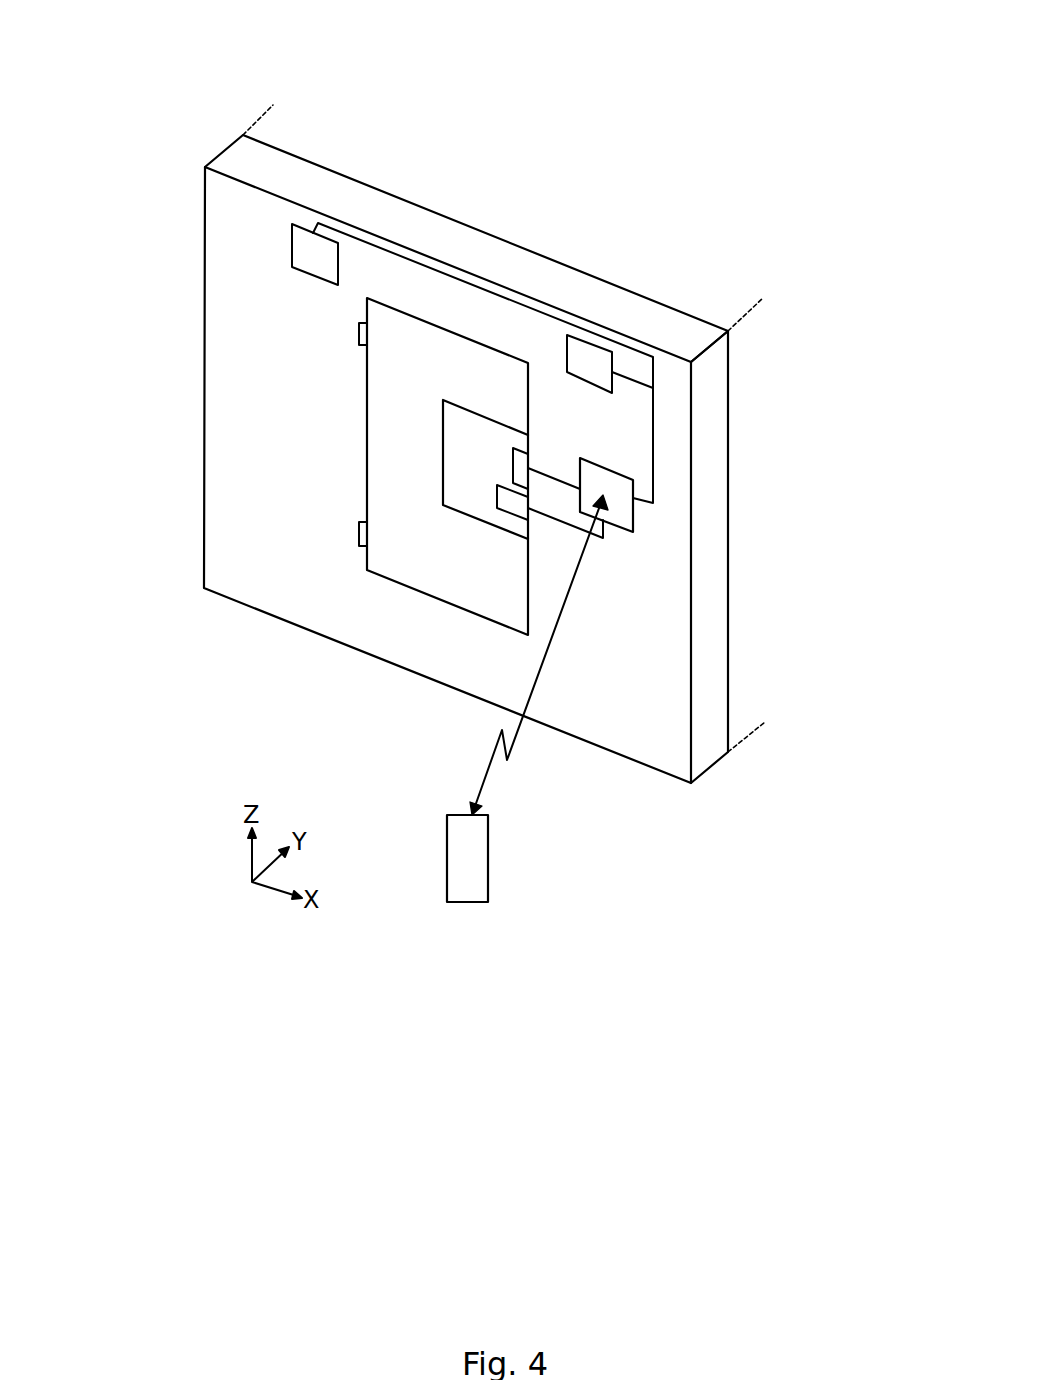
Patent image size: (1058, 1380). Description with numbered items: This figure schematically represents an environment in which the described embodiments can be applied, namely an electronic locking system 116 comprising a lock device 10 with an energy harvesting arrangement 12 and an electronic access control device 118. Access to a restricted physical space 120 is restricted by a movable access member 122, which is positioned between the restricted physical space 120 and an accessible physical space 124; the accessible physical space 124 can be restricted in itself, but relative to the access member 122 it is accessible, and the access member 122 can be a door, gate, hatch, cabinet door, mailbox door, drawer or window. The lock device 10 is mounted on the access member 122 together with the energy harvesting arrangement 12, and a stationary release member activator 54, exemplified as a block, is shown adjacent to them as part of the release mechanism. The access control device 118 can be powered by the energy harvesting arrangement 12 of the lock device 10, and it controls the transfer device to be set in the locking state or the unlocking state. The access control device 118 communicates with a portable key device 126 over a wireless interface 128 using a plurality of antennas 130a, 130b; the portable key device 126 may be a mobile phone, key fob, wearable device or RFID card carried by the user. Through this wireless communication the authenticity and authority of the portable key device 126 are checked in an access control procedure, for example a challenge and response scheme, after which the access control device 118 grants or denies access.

The electronic locking system 116 is at (643, 101).
The physical space 120 is at (551, 199).
The accessible physical space 124 is at (245, 717).
The movable access member 122 is at (433, 367).
The antenna 130a is at (296, 243).
The antenna 130b is at (593, 344).
The lock device 10 is at (467, 507).
The energy harvesting arrangement 12 is at (515, 502).
The release member activator 54 is at (524, 462).
The electronic access control device 118 is at (620, 498).
The wireless interface 128 is at (518, 732).
The portable key device 126 is at (458, 843).